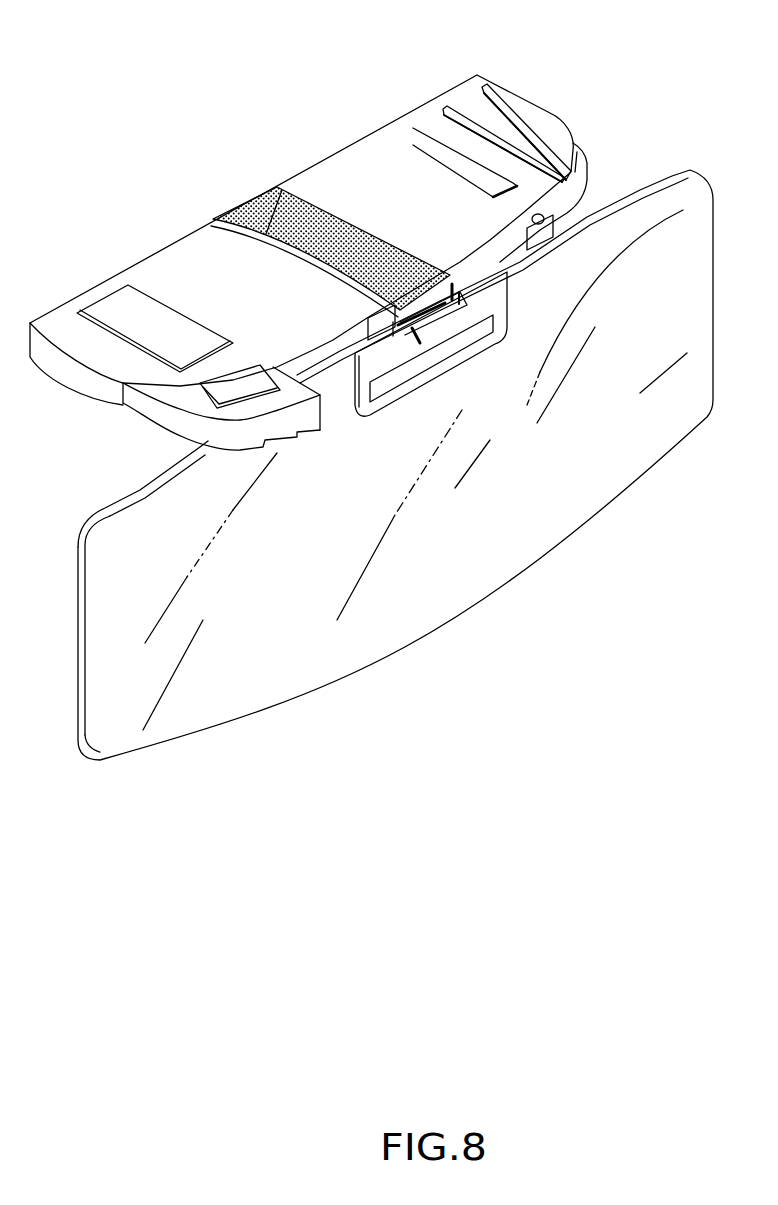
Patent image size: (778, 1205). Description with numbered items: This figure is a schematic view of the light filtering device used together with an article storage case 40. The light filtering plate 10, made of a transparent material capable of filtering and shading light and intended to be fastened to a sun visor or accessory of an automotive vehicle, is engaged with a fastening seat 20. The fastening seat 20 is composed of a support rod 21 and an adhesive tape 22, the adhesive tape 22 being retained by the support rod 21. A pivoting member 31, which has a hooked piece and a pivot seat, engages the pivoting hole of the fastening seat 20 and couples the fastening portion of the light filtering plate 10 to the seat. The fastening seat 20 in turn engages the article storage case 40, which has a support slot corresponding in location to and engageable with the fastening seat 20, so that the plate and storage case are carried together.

The light filtering plate 10 is at (555, 535).
The fastening seat 20 is at (452, 283).
The support rod 21 is at (390, 323).
The adhesive tape 22 is at (260, 197).
The pivoting member 31 is at (647, 193).
The article storage case 40 is at (353, 157).